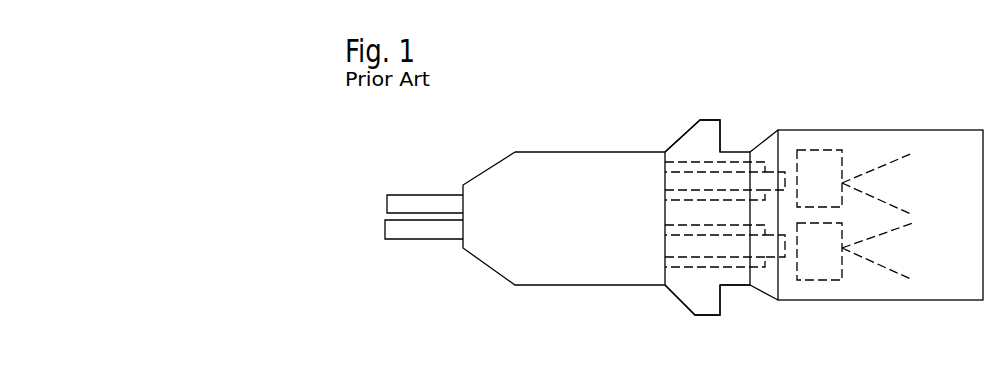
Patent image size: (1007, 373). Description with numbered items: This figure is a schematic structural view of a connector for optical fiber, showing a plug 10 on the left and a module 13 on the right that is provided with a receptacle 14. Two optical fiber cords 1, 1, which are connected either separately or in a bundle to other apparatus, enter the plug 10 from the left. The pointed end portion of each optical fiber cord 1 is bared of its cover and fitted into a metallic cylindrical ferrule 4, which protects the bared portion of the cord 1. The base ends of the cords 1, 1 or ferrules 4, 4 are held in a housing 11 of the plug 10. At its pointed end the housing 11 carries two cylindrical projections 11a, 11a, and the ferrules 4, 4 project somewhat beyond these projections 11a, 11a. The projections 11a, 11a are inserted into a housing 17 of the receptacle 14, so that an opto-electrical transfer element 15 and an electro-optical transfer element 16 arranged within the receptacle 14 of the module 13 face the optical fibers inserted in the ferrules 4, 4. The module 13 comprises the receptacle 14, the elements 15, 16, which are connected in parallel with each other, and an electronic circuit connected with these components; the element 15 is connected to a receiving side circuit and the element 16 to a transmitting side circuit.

The optical fiber cord 1 is at (425, 198).
The plug 10 is at (575, 287).
The housing 11 is at (623, 158).
The cylindrical projection 11a is at (695, 167).
The metallic cylindrical ferrule 4 is at (743, 178).
The receptacle 14 is at (703, 303).
The housing 17 is at (737, 278).
The module 13 is at (887, 128).
The opto-electrical transfer element 15 is at (828, 168).
The electro-optical transfer element 16 is at (822, 265).